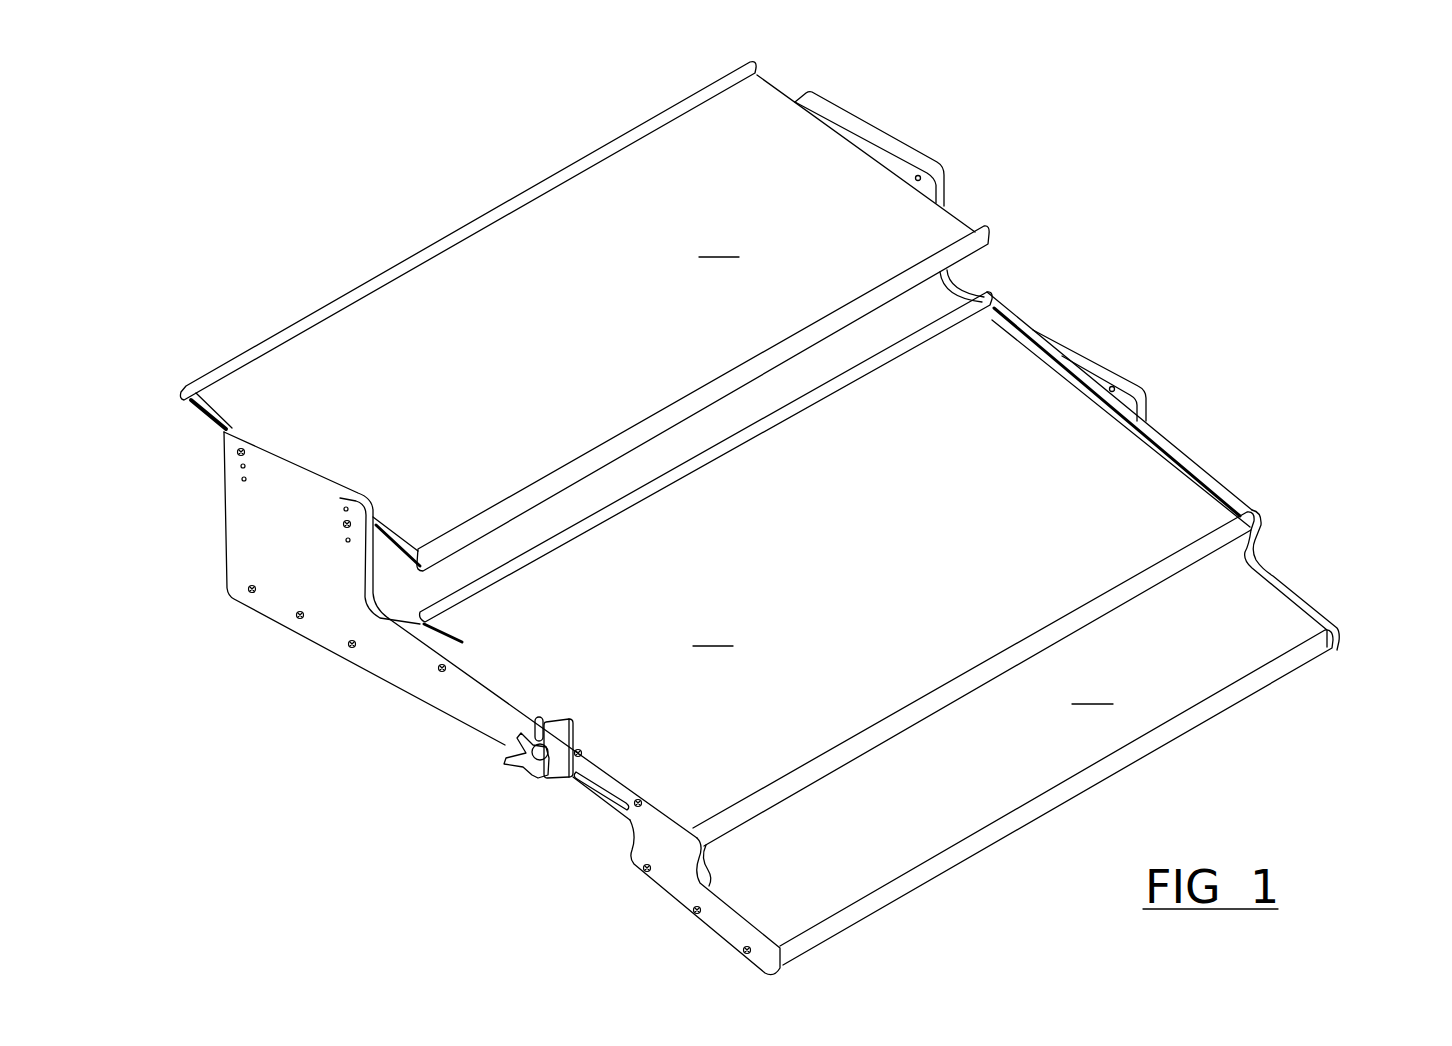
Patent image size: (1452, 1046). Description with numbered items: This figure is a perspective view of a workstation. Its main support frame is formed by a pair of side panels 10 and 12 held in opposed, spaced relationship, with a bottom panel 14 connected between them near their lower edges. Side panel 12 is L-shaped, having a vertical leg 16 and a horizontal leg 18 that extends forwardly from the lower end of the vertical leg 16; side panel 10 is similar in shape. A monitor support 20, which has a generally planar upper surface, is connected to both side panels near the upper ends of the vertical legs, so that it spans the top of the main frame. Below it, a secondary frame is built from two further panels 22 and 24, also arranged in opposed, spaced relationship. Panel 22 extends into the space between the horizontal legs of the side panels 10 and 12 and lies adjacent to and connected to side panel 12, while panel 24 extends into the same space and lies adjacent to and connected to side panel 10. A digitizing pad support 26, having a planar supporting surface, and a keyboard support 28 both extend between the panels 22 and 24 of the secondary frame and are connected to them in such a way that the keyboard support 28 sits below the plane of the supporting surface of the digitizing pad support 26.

The side panel 10 is at (958, 171).
The side panel 12 is at (444, 692).
The bottom panel 14 is at (737, 413).
The vertical leg 16 is at (295, 490).
The horizontal leg 18 is at (435, 695).
The monitor support 20 is at (584, 316).
The panel 22 is at (618, 862).
The panel 24 is at (1298, 570).
The digitizing pad support 26 is at (973, 679).
The keyboard support 28 is at (1056, 797).